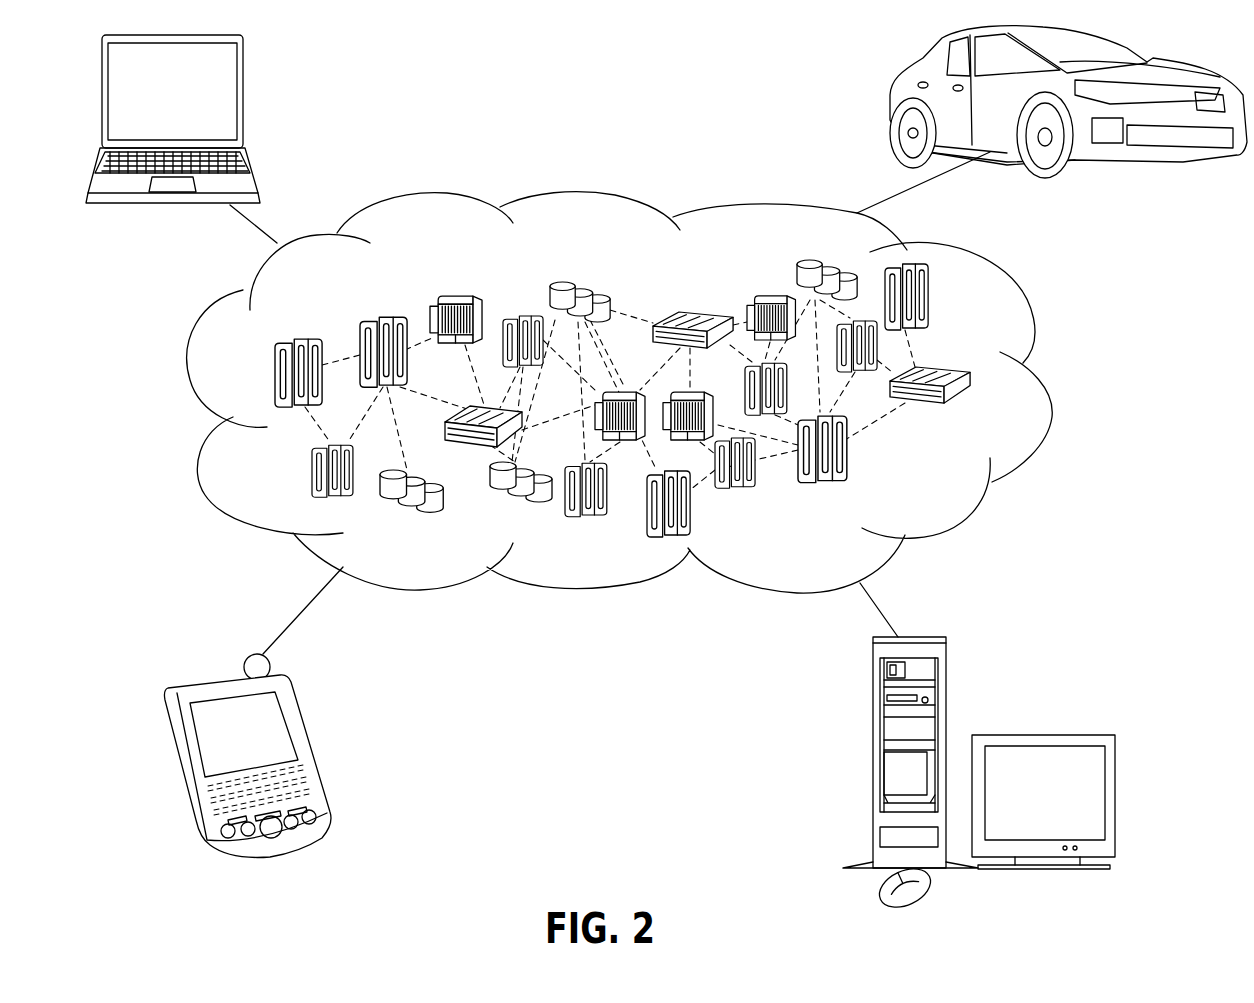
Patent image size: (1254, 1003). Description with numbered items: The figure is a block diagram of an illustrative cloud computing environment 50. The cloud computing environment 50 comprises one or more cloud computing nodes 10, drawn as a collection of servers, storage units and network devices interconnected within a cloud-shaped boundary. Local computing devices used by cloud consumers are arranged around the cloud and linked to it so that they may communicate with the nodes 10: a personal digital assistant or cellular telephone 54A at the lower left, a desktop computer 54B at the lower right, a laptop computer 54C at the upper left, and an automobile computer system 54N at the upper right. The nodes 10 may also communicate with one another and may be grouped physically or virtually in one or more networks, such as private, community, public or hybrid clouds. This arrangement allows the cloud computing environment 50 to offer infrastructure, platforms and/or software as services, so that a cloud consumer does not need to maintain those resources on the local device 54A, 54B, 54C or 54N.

The cloud computing nodes 10 is at (651, 392).
The cloud computing environment 50 is at (1043, 385).
The personal digital assistant or cellular telephone 54A is at (296, 714).
The desktop computer 54B is at (872, 698).
The laptop computer 54C is at (243, 72).
The automobile computer system 54N is at (885, 93).